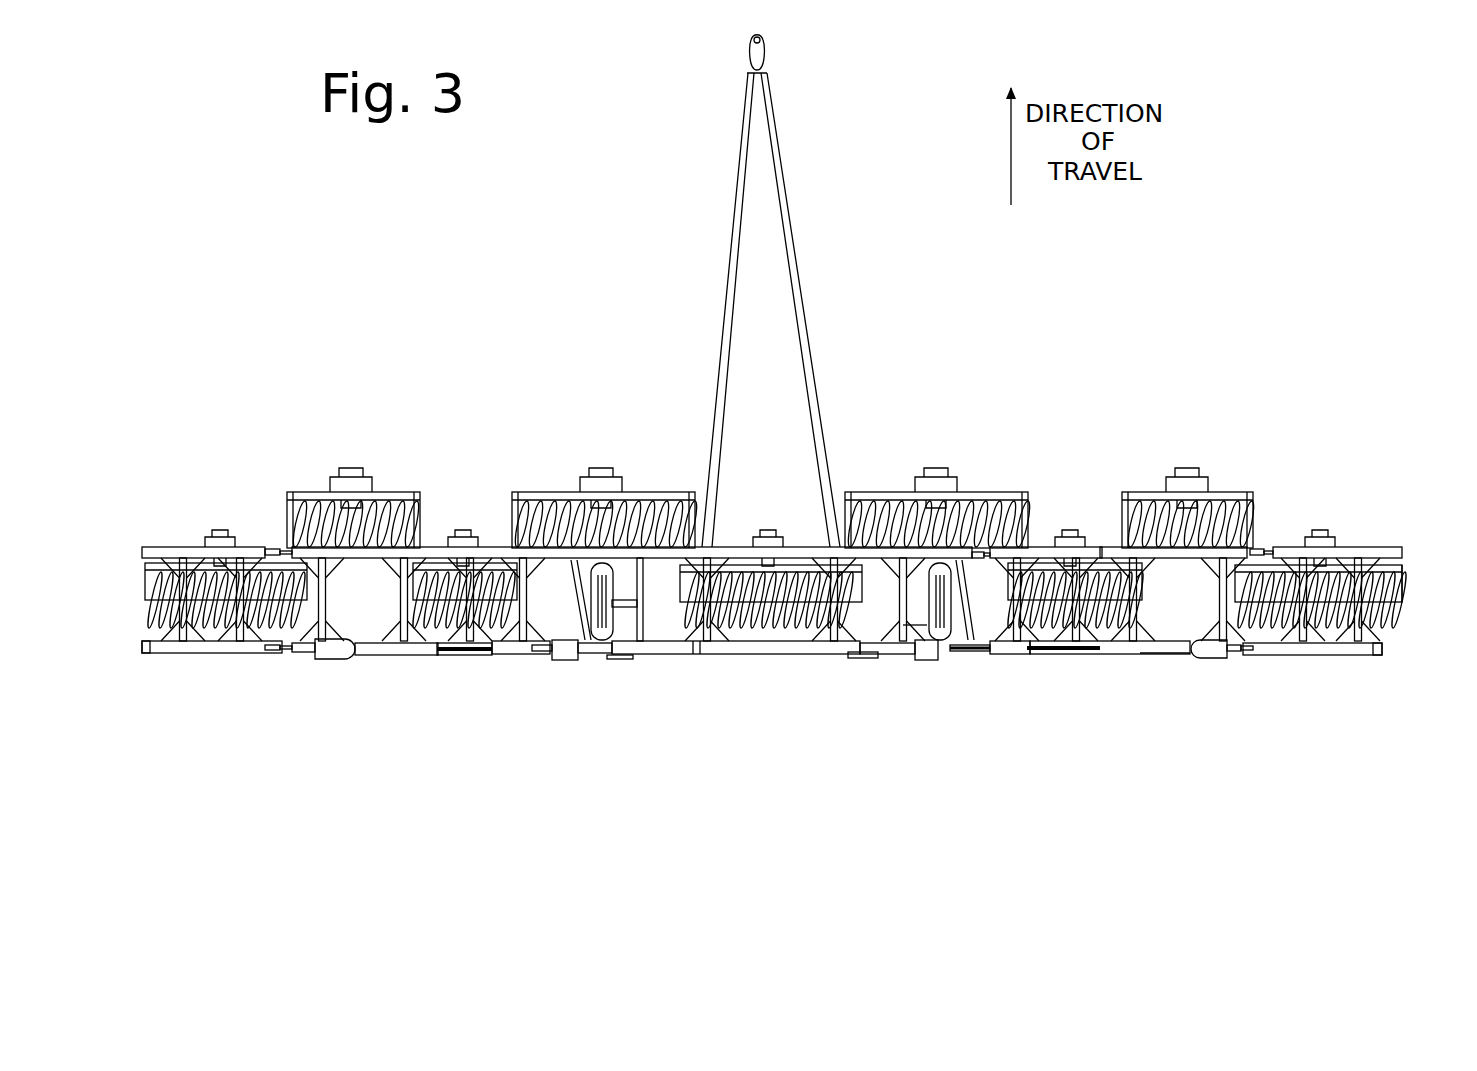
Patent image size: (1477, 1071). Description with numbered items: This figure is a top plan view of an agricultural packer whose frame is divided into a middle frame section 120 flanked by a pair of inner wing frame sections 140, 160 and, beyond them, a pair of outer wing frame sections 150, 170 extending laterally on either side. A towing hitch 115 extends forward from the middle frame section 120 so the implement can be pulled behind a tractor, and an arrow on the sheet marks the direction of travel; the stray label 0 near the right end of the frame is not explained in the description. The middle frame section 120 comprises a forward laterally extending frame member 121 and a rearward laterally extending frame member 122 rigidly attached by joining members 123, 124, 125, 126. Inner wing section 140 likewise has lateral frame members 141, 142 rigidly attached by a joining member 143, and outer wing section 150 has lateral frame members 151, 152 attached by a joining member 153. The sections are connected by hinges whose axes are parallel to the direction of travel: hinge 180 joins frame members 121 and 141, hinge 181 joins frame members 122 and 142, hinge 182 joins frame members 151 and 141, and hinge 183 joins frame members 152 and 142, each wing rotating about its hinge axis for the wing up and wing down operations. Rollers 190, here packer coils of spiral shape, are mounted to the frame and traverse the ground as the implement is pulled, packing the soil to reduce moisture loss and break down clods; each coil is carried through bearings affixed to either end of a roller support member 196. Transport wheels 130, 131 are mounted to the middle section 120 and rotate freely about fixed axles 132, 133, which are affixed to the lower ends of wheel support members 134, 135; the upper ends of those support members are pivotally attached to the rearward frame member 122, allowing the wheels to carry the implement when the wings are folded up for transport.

The end portion 0 is at (1400, 598).
The towing hitch 115 is at (797, 200).
The middle frame section 120 is at (763, 770).
The forward laterally extending frame member 121 is at (720, 553).
The rearward laterally extending frame member 122 is at (775, 657).
The joining member 123 is at (570, 627).
The joining member 124 is at (693, 627).
The joining member 125 is at (832, 627).
The joining member 126 is at (993, 653).
The transport wheel 130 is at (573, 657).
The transport wheel 131 is at (955, 657).
The axle 132 is at (617, 653).
The axle 133 is at (920, 655).
The wheel support member 134 is at (638, 620).
The wheel support member 135 is at (890, 650).
The inner wing frame section 140 is at (1135, 685).
The lateral frame member 141 is at (1055, 556).
The lateral frame member 142 is at (1150, 652).
The joining member 143 is at (1040, 650).
The outer wing frame section 150 is at (1341, 684).
The lateral frame member 151 is at (1343, 550).
The lateral frame member 152 is at (1297, 640).
The joining member 153 is at (1367, 635).
The inner wing frame section 160 is at (397, 690).
The outer wing frame section 170 is at (226, 690).
The hinge 180 is at (1053, 556).
The hinge 181 is at (987, 653).
The hinge 182 is at (1258, 555).
The hinge 183 is at (1248, 653).
The roller 190 is at (148, 617).
The roller support member 196 is at (287, 497).